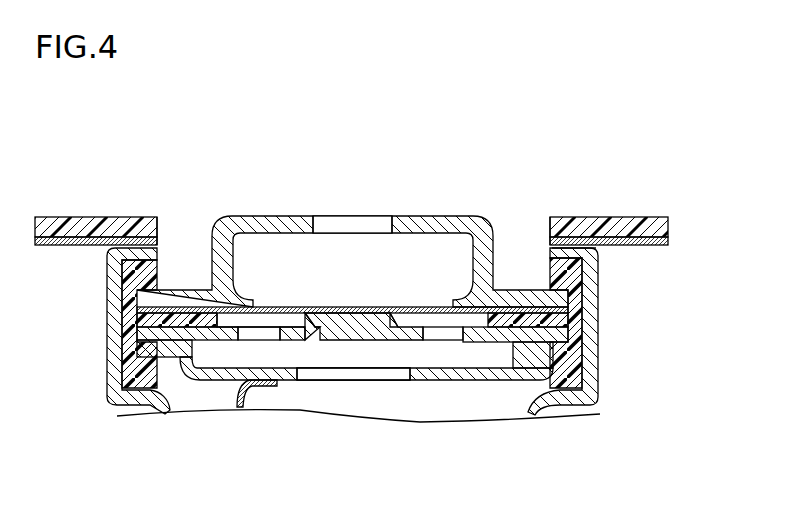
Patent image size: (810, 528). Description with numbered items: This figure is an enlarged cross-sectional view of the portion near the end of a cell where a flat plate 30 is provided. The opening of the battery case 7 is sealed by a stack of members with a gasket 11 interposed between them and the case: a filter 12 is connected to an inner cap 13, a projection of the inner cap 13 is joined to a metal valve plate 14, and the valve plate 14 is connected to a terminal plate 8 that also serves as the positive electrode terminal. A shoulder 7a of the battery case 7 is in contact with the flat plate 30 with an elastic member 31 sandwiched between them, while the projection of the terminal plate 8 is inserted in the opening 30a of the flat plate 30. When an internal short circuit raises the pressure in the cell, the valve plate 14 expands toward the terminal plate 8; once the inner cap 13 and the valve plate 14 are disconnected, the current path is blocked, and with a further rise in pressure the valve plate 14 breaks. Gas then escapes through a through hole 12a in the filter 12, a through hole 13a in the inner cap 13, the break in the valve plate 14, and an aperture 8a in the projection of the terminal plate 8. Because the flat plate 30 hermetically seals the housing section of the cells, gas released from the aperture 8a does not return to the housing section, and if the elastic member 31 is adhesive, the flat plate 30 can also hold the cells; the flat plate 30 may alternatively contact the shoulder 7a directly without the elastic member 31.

The battery case 7 is at (598, 340).
The shoulder 7a is at (602, 250).
The terminal plate 8 is at (432, 230).
The aperture 8a is at (350, 230).
The gasket 11 is at (573, 283).
The filter 12 is at (472, 373).
The through hole 12a is at (353, 373).
The inner cap 13 is at (203, 333).
The through hole 13a is at (265, 335).
The valve plate 14 is at (250, 310).
The flat plate 30 is at (665, 225).
The opening 30a is at (186, 236).
The elastic member 31 is at (665, 240).